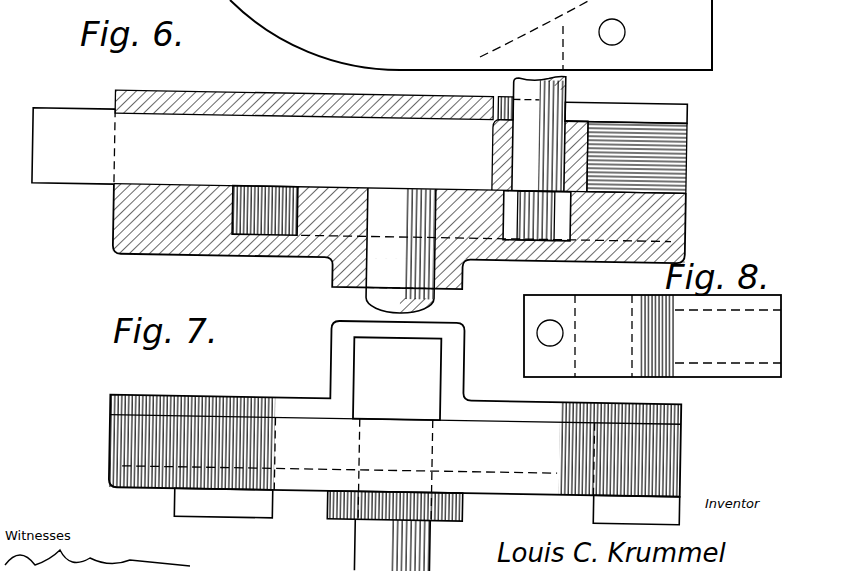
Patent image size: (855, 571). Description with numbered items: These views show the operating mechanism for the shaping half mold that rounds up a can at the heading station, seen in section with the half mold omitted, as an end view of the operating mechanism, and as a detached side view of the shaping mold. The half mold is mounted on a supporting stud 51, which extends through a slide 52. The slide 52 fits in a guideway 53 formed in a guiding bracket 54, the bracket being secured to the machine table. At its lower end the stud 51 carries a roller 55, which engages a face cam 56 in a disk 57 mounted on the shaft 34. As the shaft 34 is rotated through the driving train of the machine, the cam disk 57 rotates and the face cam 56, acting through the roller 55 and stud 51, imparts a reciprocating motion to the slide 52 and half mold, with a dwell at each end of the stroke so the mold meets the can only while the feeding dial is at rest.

The shaft 34 is at (365, 300).
The supporting stud 51 is at (563, 96).
The slide 52 is at (359, 141).
The guideway 53 is at (444, 377).
The guiding bracket 54 is at (249, 406).
The roller 55 is at (509, 258).
The face cam 56 is at (261, 242).
The disk 57 is at (685, 212).